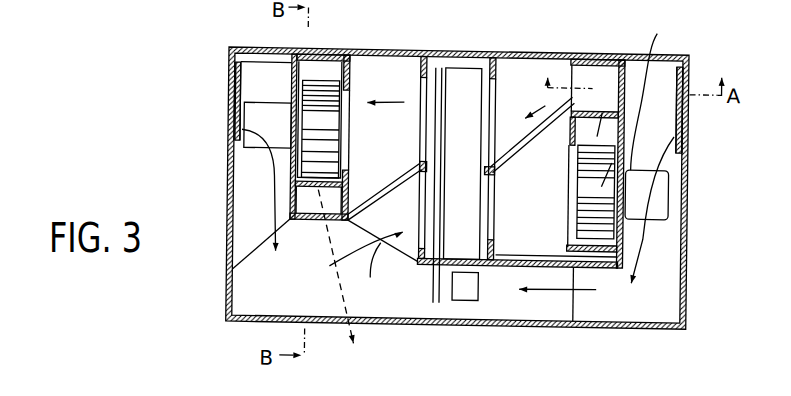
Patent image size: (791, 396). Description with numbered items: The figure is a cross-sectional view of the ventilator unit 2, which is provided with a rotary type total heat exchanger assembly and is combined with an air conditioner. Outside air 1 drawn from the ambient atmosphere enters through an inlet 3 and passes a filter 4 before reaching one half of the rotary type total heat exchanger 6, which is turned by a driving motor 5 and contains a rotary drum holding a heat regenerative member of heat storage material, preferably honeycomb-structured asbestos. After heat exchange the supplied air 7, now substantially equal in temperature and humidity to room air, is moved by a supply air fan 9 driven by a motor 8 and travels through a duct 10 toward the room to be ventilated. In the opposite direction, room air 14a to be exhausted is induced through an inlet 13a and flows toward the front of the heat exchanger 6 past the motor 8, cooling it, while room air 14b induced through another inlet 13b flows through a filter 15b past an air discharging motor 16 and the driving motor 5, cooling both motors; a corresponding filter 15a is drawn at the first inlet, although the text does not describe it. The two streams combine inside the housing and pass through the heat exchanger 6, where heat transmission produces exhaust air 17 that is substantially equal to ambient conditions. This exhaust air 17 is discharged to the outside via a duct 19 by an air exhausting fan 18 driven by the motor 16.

The outside air 1 is at (553, 102).
The ventilator unit 2 is at (689, 264).
The inlet 3 is at (578, 47).
The filter 4 is at (570, 47).
The driving motor 5 is at (464, 286).
The rotary type total heat exchanger 6 is at (464, 79).
The supplied air 7 is at (331, 279).
The motor 8 is at (270, 112).
The supply air fan 9 is at (328, 80).
The duct 10 is at (250, 292).
The inlet 13a is at (236, 74).
The inlet 13b is at (692, 70).
The room air 14a is at (236, 129).
The room air 14b is at (676, 125).
The air gap (left) 15a is at (231, 101).
The filter 15b is at (687, 72).
The air discharging motor 16 is at (704, 190).
The exhaust air 17 is at (604, 105).
The air exhausting fan 18 is at (680, 48).
The duct 19 is at (651, 91).